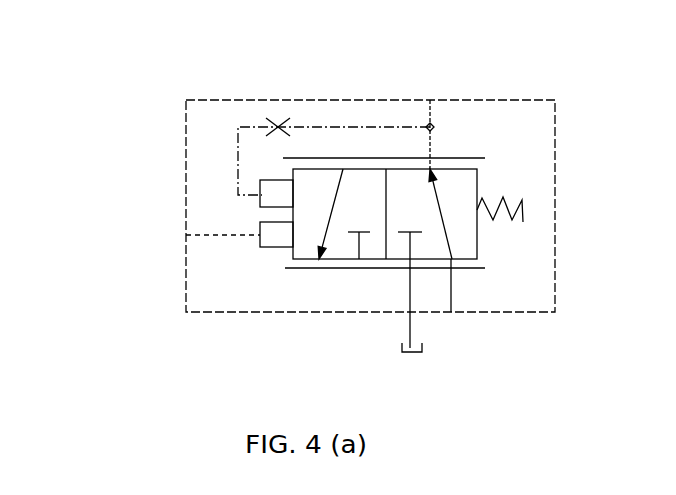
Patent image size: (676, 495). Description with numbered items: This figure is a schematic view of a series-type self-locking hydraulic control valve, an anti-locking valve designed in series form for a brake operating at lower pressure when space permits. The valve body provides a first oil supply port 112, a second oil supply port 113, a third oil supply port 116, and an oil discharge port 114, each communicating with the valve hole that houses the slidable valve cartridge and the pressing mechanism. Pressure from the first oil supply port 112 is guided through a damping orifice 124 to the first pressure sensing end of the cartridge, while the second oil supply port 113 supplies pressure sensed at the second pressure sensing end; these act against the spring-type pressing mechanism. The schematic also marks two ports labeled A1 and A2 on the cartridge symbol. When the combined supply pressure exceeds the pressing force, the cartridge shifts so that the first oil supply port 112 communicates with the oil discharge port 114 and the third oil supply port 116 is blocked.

The first oil supply port 112 is at (432, 100).
The second oil supply port 113 is at (185, 233).
The oil discharge port 114 is at (408, 312).
The third oil supply port 116 is at (453, 313).
The damping orifice 124 is at (278, 120).
The port A1 is at (177, 103).
The port A2 is at (185, 367).